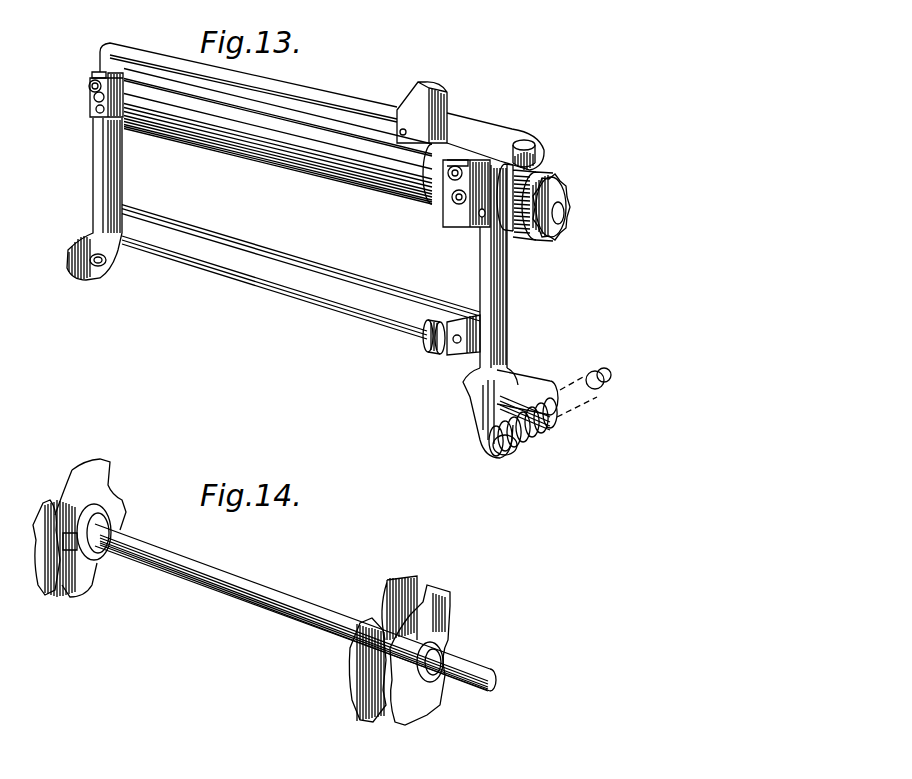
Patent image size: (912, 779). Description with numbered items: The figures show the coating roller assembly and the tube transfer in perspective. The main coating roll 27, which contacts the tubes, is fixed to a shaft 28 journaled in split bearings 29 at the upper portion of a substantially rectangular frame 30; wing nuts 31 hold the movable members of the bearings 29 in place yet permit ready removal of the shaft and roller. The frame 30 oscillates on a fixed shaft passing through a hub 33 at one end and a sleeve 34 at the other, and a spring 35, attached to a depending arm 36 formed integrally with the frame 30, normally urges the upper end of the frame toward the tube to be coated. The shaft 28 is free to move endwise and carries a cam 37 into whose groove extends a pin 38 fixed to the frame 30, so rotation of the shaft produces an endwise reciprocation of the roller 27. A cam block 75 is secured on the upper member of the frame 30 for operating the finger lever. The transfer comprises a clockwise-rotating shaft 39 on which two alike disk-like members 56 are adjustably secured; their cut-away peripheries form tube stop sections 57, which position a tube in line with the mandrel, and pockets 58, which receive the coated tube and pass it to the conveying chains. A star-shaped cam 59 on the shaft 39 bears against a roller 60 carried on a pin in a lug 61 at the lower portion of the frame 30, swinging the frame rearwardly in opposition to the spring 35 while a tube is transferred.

In FIG. 13, the coating roller 27 is at (262, 150).
In FIG. 13, the shaft 28 is at (428, 187).
In FIG. 13, the split bearings 29 is at (98, 108).
In FIG. 13, the frame 30 is at (105, 192).
In FIG. 13, the wing nuts 31 is at (92, 84).
In FIG. 13, the hub 33 is at (75, 256).
In FIG. 13, the sleeve 34 is at (530, 375).
In FIG. 13, the spring 35 is at (545, 425).
In FIG. 13, the depending arm 36 is at (480, 412).
In FIG. 13, the cam 37 is at (573, 158).
In FIG. 13, the pin 38 is at (540, 110).
In FIG. 14, the shaft 39 is at (235, 572).
In FIG. 14, the disk-like members 56 is at (115, 500).
In FIG. 14, the tube stop sections 57 is at (105, 460).
In FIG. 14, the pockets 58 is at (58, 493).
In FIG. 14, the star-shaped cam 59 is at (450, 622).
In FIG. 13, the roller 60 is at (426, 354).
In FIG. 13, the lug 61 is at (458, 354).
In FIG. 13, the cam block 75 is at (450, 100).